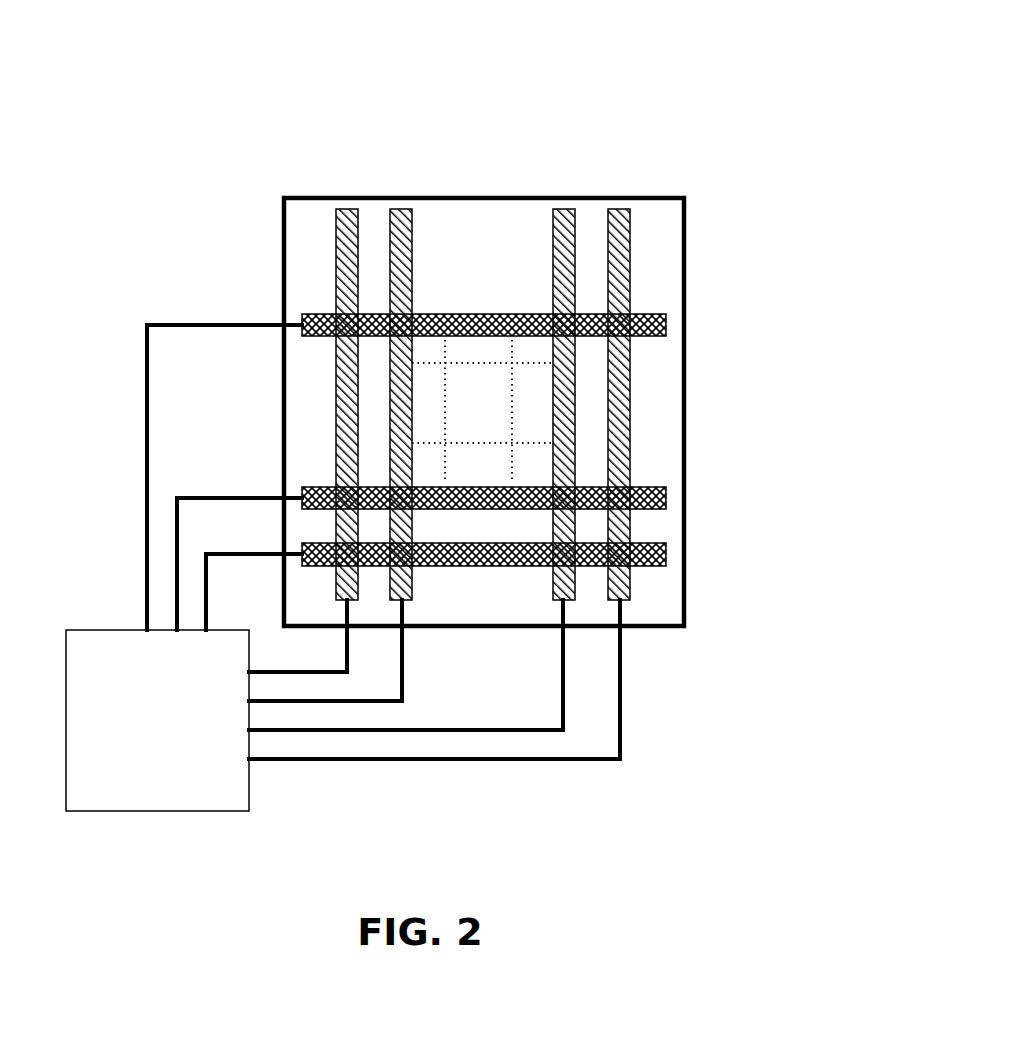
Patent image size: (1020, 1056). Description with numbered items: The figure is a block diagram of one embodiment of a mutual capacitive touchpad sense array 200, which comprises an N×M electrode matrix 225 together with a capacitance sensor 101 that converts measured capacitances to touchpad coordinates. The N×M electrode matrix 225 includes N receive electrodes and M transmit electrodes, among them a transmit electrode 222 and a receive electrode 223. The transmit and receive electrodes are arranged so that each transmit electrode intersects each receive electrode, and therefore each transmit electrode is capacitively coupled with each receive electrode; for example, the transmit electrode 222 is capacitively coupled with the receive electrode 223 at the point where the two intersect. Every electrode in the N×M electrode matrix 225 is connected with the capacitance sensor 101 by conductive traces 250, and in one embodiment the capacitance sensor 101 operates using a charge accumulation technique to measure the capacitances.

The mutual capacitive touchpad sense array 200 is at (554, 160).
The N×M electrode matrix 225 is at (484, 356).
The transmit electrode 222 is at (295, 310).
The receive electrode 223 is at (620, 208).
The conductive traces 250 is at (587, 763).
The capacitance sensor 101 is at (157, 720).